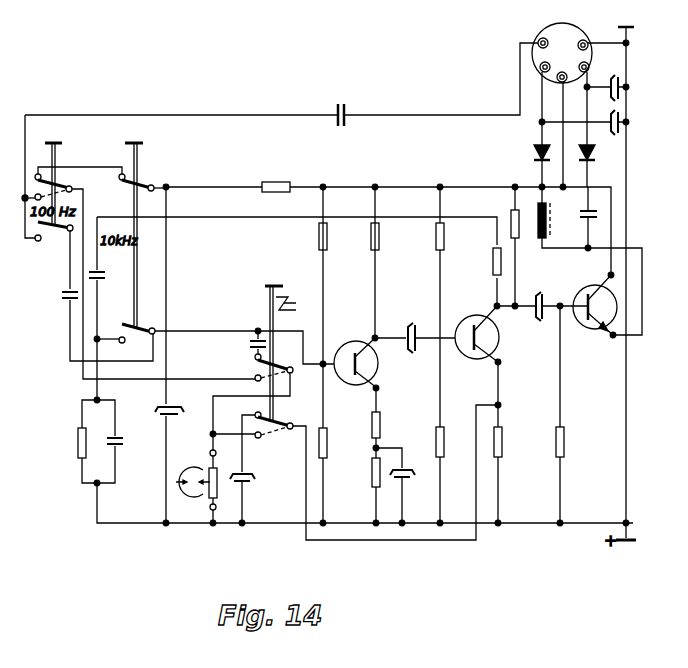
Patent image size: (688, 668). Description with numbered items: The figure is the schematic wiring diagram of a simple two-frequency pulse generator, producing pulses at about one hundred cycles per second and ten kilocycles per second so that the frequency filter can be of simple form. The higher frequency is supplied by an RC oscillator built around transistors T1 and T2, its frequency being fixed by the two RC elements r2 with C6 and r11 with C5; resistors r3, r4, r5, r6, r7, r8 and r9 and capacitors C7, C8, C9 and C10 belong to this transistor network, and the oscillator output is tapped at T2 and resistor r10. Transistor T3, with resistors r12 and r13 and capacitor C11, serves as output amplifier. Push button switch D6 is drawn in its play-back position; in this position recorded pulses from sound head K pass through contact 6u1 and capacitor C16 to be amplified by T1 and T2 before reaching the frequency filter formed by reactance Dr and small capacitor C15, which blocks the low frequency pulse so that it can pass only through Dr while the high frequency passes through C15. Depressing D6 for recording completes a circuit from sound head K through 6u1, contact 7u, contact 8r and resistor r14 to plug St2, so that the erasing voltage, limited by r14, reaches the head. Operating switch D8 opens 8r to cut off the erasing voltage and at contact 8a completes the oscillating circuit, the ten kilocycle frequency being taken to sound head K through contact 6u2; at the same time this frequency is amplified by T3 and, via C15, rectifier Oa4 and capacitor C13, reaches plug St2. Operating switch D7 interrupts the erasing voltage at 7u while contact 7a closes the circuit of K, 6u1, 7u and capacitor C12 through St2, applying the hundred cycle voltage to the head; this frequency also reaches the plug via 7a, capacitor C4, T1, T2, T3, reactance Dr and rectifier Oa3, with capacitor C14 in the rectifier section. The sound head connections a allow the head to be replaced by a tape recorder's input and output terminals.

The switch D7 is at (55, 175).
The switch D8 is at (133, 226).
The push button switch D6 is at (280, 345).
The contact 7u is at (56, 184).
The contact 7a is at (54, 235).
The contact 8r is at (138, 189).
The contact 8a is at (137, 337).
The contact 6u1 is at (261, 367).
The contact 6u2 is at (274, 430).
The capacitor C4 is at (60, 296).
The capacitor C5 is at (108, 275).
The capacitor C6 is at (123, 450).
The capacitor C7 is at (165, 402).
The capacitor C8 is at (248, 485).
The capacitor C9 is at (408, 482).
The capacitor C10 is at (425, 334).
The capacitor C11 is at (539, 318).
The capacitor C12 is at (339, 125).
The capacitor C13 is at (611, 77).
The capacitor C14 is at (603, 117).
The capacitor C15 is at (579, 225).
The capacitor C16 is at (245, 342).
The resistor r2 is at (73, 443).
The resistor r3 is at (334, 443).
The resistor r4 is at (312, 236).
The resistor r5 is at (387, 425).
The resistor r6 is at (368, 474).
The resistor r7 is at (363, 236).
The resistor r8 is at (450, 442).
The resistor r9 is at (428, 236).
The resistor r10 is at (513, 442).
The resistor r11 is at (485, 261).
The resistor r12 is at (505, 216).
The resistor r13 is at (576, 442).
The resistor r14 is at (276, 178).
The transistor T1 is at (356, 358).
The transistor T2 is at (477, 342).
The transistor T3 is at (595, 312).
The sound head K is at (193, 469).
The sound head connections a is at (218, 481).
The plug St2 is at (553, 50).
The rectifier Oa3 is at (525, 154).
The rectifier Oa4 is at (604, 152).
The reactance Dr is at (550, 212).